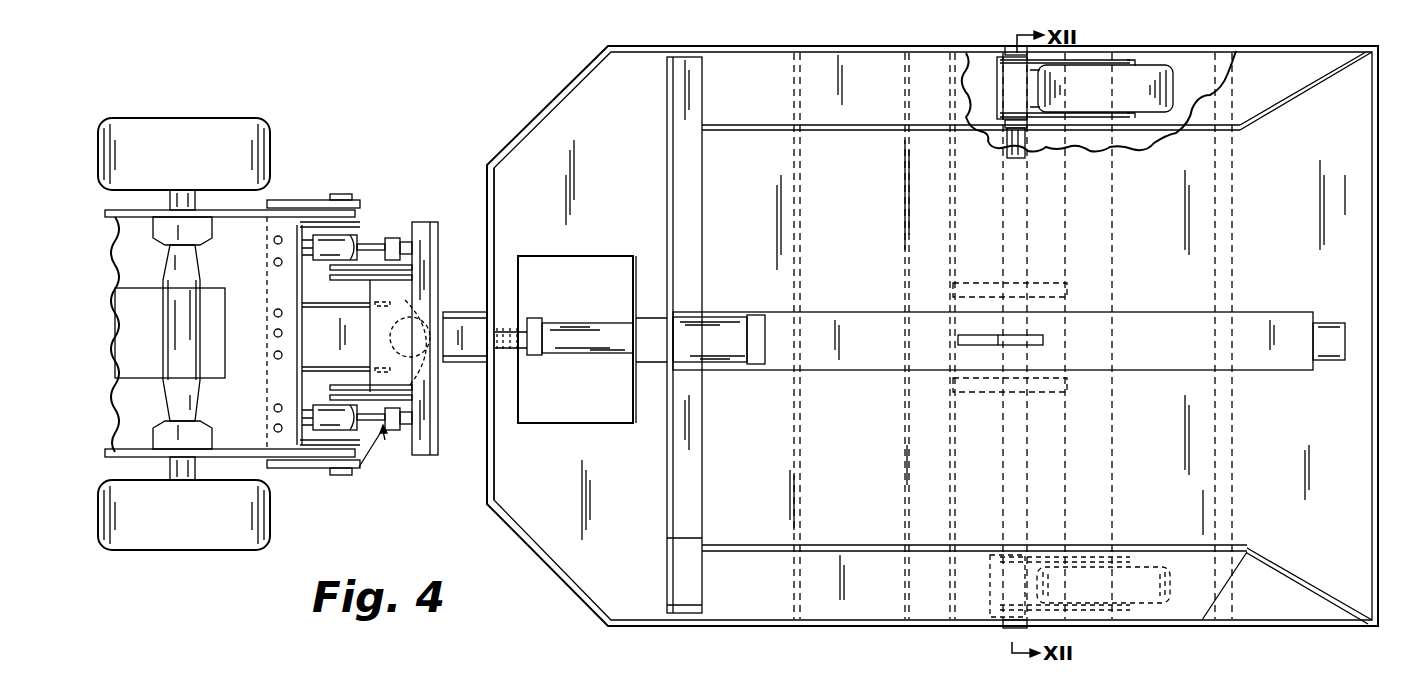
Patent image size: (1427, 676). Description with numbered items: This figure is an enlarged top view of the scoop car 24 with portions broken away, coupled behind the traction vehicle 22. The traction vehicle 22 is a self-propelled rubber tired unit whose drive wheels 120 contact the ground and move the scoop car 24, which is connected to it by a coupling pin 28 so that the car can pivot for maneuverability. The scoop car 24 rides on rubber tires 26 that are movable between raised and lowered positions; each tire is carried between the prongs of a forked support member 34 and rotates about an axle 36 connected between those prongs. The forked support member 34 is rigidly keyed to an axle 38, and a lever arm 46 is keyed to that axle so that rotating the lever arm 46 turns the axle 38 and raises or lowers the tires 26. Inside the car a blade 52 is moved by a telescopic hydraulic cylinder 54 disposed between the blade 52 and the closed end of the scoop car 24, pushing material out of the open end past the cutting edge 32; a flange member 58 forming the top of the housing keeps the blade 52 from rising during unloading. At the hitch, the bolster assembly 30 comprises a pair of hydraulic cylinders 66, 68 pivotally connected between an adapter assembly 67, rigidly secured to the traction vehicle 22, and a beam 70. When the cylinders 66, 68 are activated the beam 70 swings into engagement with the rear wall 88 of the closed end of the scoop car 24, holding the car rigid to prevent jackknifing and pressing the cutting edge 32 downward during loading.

The traction vehicle 22 is at (300, 470).
The scoop car 24 is at (838, 446).
The wheels 26 is at (1173, 98).
The coupling pin 28 is at (434, 370).
The bolster assembly 30 is at (378, 450).
The cutting edge 32 is at (1380, 422).
The forked support member 34 is at (1097, 67).
The axle 36 is at (1120, 85).
The axle 38 is at (1010, 143).
The lever arm 46 is at (1030, 340).
The blade 52 is at (673, 474).
The telescopic hydraulic cylinder 54 is at (600, 323).
The flange member 58 is at (1178, 312).
The hydraulic cylinder 66 is at (328, 405).
The adapter assembly 67 is at (390, 247).
The hydraulic cylinder 68 is at (327, 260).
The beam 70 is at (433, 222).
The rear wall 88 is at (487, 207).
The drive wheels 120 is at (270, 139).